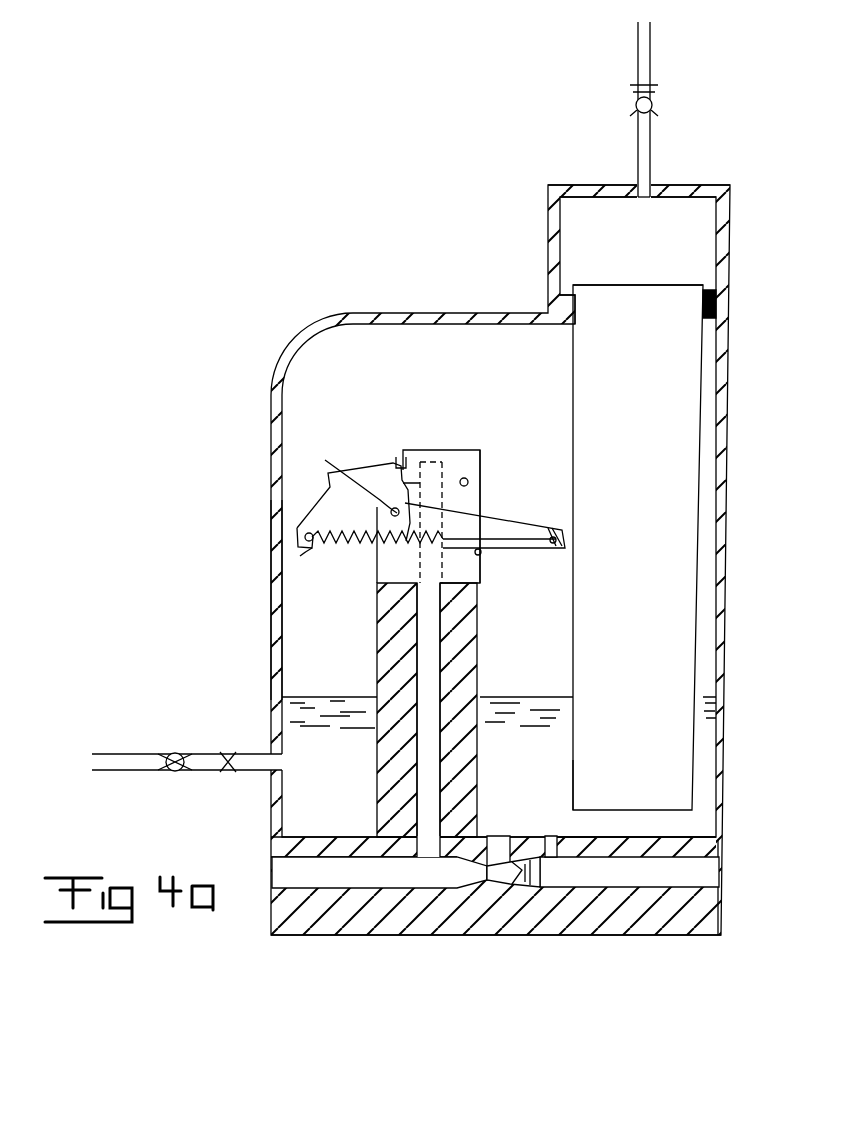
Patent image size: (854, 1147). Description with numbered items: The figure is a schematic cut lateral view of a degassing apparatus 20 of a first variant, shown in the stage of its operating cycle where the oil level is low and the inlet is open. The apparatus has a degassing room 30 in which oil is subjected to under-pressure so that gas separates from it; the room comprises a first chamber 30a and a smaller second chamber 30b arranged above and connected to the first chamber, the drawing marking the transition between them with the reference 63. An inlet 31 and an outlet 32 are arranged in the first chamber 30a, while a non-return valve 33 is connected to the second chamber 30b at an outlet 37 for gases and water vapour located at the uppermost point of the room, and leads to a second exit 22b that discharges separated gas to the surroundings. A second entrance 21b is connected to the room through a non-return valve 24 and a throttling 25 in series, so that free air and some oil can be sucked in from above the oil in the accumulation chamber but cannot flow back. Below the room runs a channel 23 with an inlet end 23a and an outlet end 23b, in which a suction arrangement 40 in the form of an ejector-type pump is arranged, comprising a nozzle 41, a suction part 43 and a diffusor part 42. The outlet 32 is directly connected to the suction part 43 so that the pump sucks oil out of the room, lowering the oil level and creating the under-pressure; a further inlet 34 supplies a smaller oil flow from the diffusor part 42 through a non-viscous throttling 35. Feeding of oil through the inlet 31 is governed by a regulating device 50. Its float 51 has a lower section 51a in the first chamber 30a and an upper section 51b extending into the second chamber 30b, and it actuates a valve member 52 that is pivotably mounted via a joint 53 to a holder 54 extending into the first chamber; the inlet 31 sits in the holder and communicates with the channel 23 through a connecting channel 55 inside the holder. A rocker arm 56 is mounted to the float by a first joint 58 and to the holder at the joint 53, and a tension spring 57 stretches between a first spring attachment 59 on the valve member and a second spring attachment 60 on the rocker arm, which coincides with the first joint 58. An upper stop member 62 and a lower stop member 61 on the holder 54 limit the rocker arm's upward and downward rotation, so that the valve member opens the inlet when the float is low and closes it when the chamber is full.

The degassing apparatus 20 is at (232, 546).
The second entrance 21b is at (92, 766).
The second exit 22b is at (652, 16).
The channel 23 is at (338, 870).
The inlet end 23a is at (272, 875).
The outlet end 23b is at (718, 872).
The non-return valve 24 is at (172, 755).
The throttling 25 is at (228, 757).
The degassing room 30 is at (402, 336).
The first chamber 30a is at (298, 620).
The second chamber 30b is at (575, 246).
The inlet 31 is at (420, 458).
The outlet 32 is at (500, 842).
The non-return valve 33 is at (652, 104).
The further inlet 34 is at (552, 845).
The non-viscous throttling 35 is at (556, 848).
The outlet 37 is at (650, 197).
The suction arrangement 40 is at (484, 898).
The nozzle 41 is at (480, 886).
The diffusor part 42 is at (518, 885).
The suction part 43 is at (522, 870).
The regulating device 50 is at (514, 383).
The float 51 is at (573, 428).
The lower section 51a is at (572, 676).
The upper section 51b is at (645, 292).
The valve member 52 is at (368, 470).
The joint 53 is at (362, 480).
The holder 54 is at (376, 652).
The connecting channel 55 is at (442, 660).
The rocker arm 56 is at (515, 530).
The tension spring 57 is at (366, 548).
The first joint 58 is at (562, 530).
The first spring attachment 59 is at (327, 554).
The second spring attachment 60 is at (565, 545).
The lower stop member 61 is at (478, 556).
The upper stop member 62 is at (464, 478).
The shoulder 63 is at (580, 312).